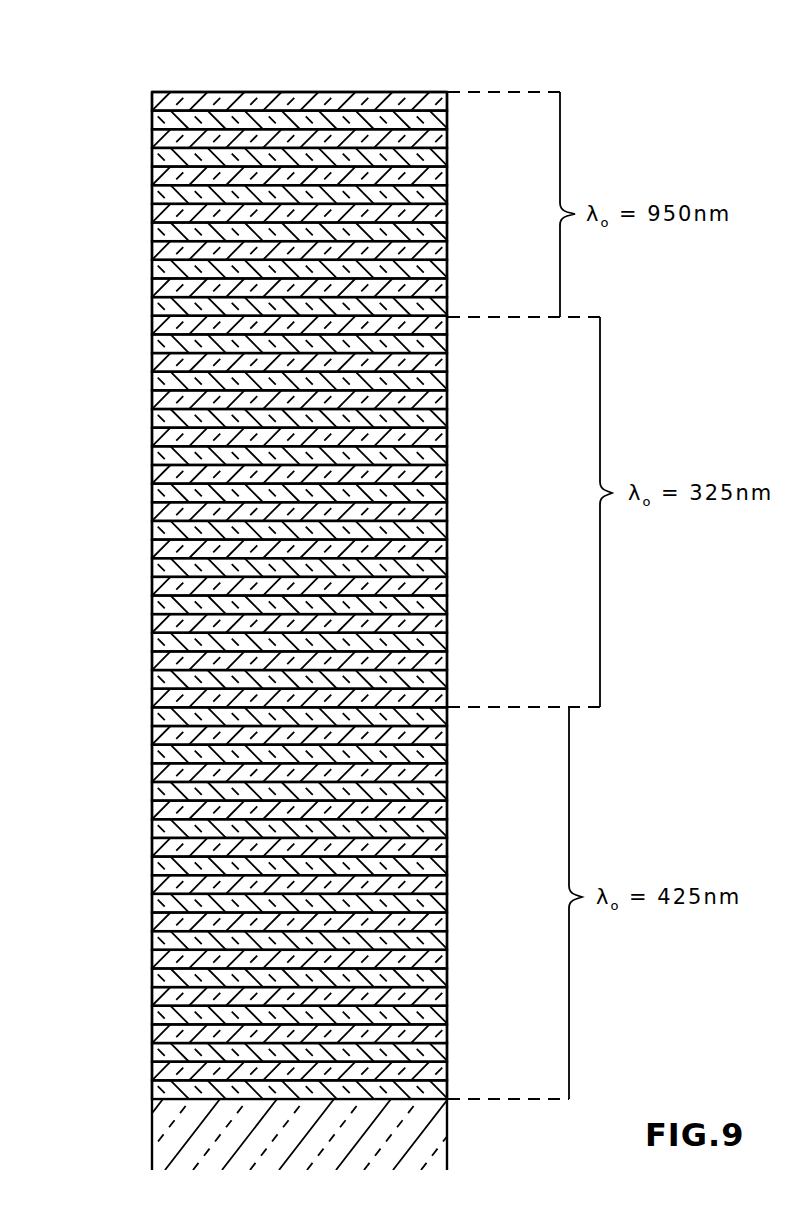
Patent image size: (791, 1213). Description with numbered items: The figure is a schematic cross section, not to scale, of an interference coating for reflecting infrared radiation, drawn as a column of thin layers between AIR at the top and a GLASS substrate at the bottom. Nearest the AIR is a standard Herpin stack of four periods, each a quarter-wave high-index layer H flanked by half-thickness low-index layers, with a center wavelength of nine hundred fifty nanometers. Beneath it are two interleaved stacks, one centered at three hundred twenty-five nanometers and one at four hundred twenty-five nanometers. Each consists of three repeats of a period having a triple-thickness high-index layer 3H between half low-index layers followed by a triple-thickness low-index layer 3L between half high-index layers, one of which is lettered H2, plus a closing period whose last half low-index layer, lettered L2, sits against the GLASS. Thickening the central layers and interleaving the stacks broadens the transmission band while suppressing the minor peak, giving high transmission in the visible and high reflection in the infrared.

The high-index layer H is at (447, 120).
The triple-thickness high-index layer 3H is at (447, 344).
The triple-thickness low-index layer 3L is at (447, 400).
The half-thickness high-index layer H2 is at (447, 810).
The half-thickness low-index layer L2 is at (152, 1090).
The glass substrate GLASS is at (448, 1147).
The air AIR is at (299, 66).